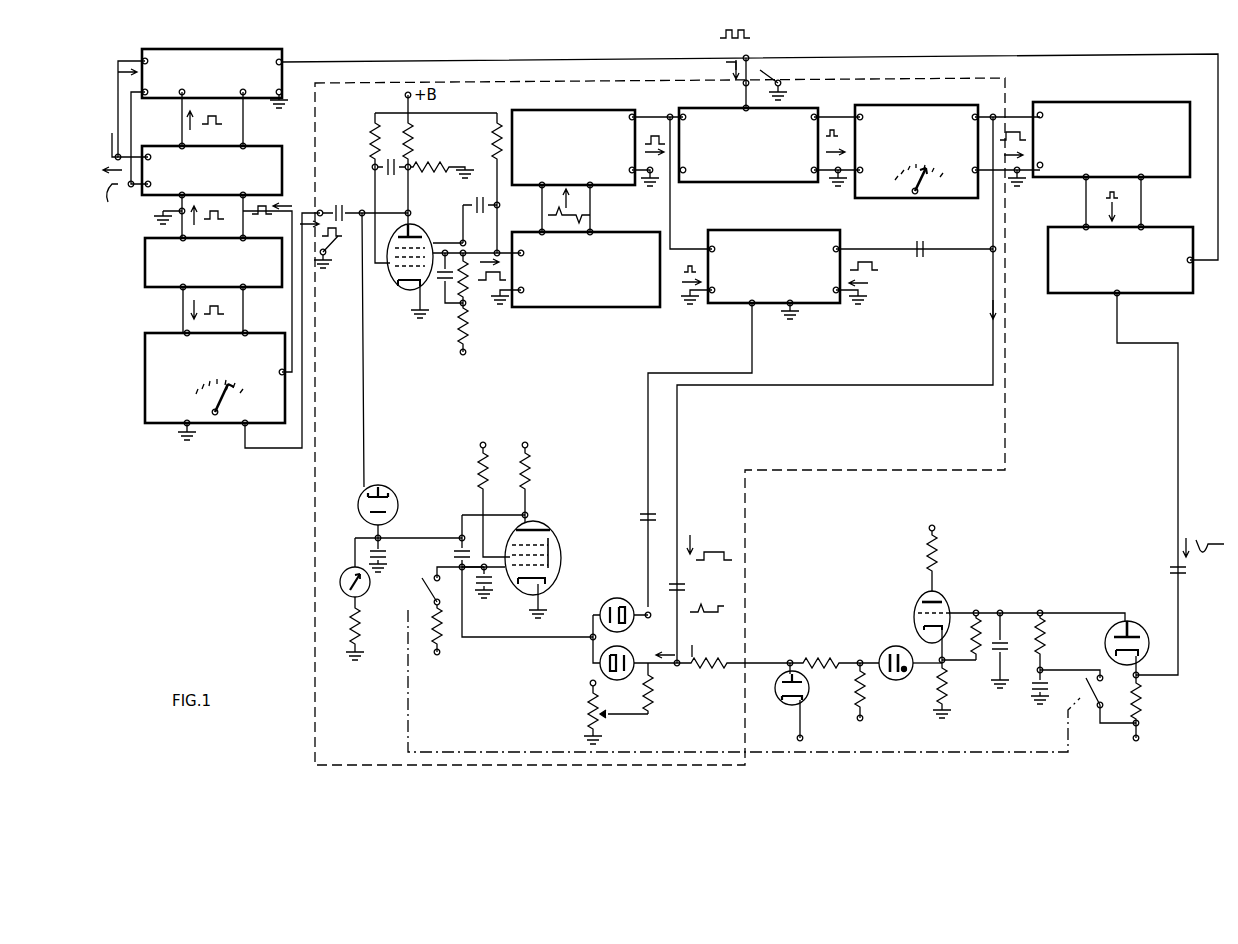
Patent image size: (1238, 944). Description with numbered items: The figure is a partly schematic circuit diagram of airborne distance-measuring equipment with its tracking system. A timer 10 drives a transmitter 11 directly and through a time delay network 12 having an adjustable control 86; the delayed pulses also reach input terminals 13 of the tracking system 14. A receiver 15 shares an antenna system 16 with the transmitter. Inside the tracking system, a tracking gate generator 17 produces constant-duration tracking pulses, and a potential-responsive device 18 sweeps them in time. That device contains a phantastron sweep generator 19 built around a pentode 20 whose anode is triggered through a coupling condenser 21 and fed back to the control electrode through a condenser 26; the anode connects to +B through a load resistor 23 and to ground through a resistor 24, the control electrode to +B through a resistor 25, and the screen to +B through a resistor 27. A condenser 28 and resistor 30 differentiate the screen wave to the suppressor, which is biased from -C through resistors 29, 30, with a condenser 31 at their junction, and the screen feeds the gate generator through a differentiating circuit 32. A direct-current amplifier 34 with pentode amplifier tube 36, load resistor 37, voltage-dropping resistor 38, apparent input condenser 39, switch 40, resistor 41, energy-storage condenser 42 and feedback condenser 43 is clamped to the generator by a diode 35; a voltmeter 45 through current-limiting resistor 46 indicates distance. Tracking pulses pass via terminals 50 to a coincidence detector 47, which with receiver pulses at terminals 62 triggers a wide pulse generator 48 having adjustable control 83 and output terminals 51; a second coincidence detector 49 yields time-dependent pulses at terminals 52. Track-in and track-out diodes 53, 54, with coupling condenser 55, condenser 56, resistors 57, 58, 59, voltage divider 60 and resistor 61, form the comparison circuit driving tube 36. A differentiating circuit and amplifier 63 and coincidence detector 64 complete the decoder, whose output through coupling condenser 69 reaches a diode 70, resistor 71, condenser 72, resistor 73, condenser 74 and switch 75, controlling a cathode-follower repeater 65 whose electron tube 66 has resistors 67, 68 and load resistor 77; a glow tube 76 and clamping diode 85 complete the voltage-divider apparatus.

The timer 10 is at (145, 272).
The transmitter 11 is at (168, 146).
The time delay network 12 is at (145, 366).
The input terminals 13 is at (330, 250).
The tracking system 14 is at (315, 105).
The receiver 15 is at (211, 49).
The antenna system 16 is at (110, 179).
The tracking gate generator 17 is at (584, 110).
The potential-responsive device 18 is at (462, 436).
The synchronized sweep generator 19 is at (436, 155).
The pentode 20 is at (424, 240).
The coupling condenser 21 is at (341, 206).
The load resistor 23 is at (411, 140).
The resistor 24 is at (439, 163).
The resistor 25 is at (371, 146).
The condenser 26 is at (389, 178).
The resistor 27 is at (492, 140).
The condenser 28 is at (480, 202).
The resistor 29 is at (464, 354).
The resistor 30 is at (466, 300).
The condenser 31 is at (442, 284).
The differentiating circuit 32 is at (534, 230).
The direct-current amplifier 34 is at (543, 558).
The diode 35 is at (358, 509).
The pentode amplifier tube 36 is at (546, 586).
The load resistor 37 is at (524, 472).
The voltage-dropping resistor 38 is at (473, 472).
The condenser 39 is at (504, 590).
The switch 40 is at (420, 584).
The resistor 41 is at (428, 636).
The energy-storage condenser 42 is at (383, 558).
The condenser 43 is at (451, 552).
The voltmeter 45 is at (340, 580).
The current-limiting resistor 46 is at (360, 639).
The coincidence detector 47 is at (718, 108).
The wide pulse generator 48 is at (924, 104).
The coincidence detector 49 is at (772, 226).
The terminals 50 is at (676, 112).
The output terminals 51 is at (975, 114).
The output terminals 52 is at (760, 312).
The diode 53 is at (604, 610).
The diode 54 is at (600, 654).
The coupling condenser 55 is at (640, 520).
The condenser 56 is at (686, 588).
The resistor 57 is at (722, 642).
The resistor 58 is at (816, 656).
The resistor 59 is at (850, 690).
The voltage divider 60 is at (589, 696).
The resistor 61 is at (652, 686).
The input terminals 62 is at (748, 83).
The differentiating circuit and amplifier 63 is at (1119, 102).
The coincidence detector 64 is at (1040, 224).
The cathode-follower repeater 65 is at (924, 618).
The electron tube 66 is at (948, 604).
The resistor 67 is at (974, 640).
The resistor 68 is at (946, 692).
The coupling condenser 69 is at (1186, 570).
The diode 70 is at (1102, 644).
The resistor 71 is at (1138, 720).
The condenser 72 is at (1008, 644).
The resistor 73 is at (1042, 654).
The condenser 74 is at (1034, 690).
The switch 75 is at (1082, 686).
The glow tube 76 is at (872, 658).
The load resistor 77 is at (935, 558).
The adjustable control 83 is at (923, 179).
The diode 85 is at (780, 706).
The adjustable control 86 is at (235, 396).